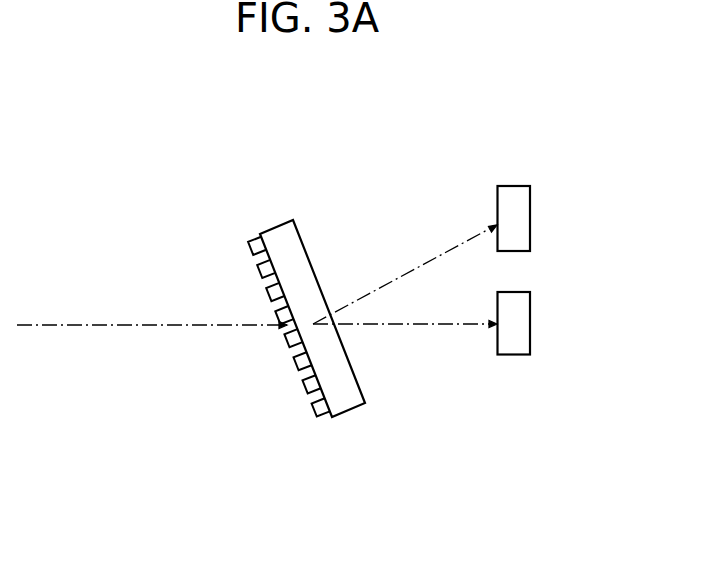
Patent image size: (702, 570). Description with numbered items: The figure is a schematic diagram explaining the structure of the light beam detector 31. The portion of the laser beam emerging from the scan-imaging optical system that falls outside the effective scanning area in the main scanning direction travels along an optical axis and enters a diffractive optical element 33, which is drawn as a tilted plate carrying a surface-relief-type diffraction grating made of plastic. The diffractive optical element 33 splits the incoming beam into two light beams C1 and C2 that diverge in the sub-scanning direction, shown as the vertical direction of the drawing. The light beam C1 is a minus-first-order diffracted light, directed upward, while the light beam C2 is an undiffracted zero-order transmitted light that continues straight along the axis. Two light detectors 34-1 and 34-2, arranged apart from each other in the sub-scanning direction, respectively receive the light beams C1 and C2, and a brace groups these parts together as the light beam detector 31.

The light beam detector 31 is at (226, 141).
The diffractive optical element 33 is at (277, 228).
The light detector 34-1 is at (513, 223).
The light detector 34-2 is at (513, 324).
The light beam C1 is at (405, 273).
The light beam C2 is at (442, 322).